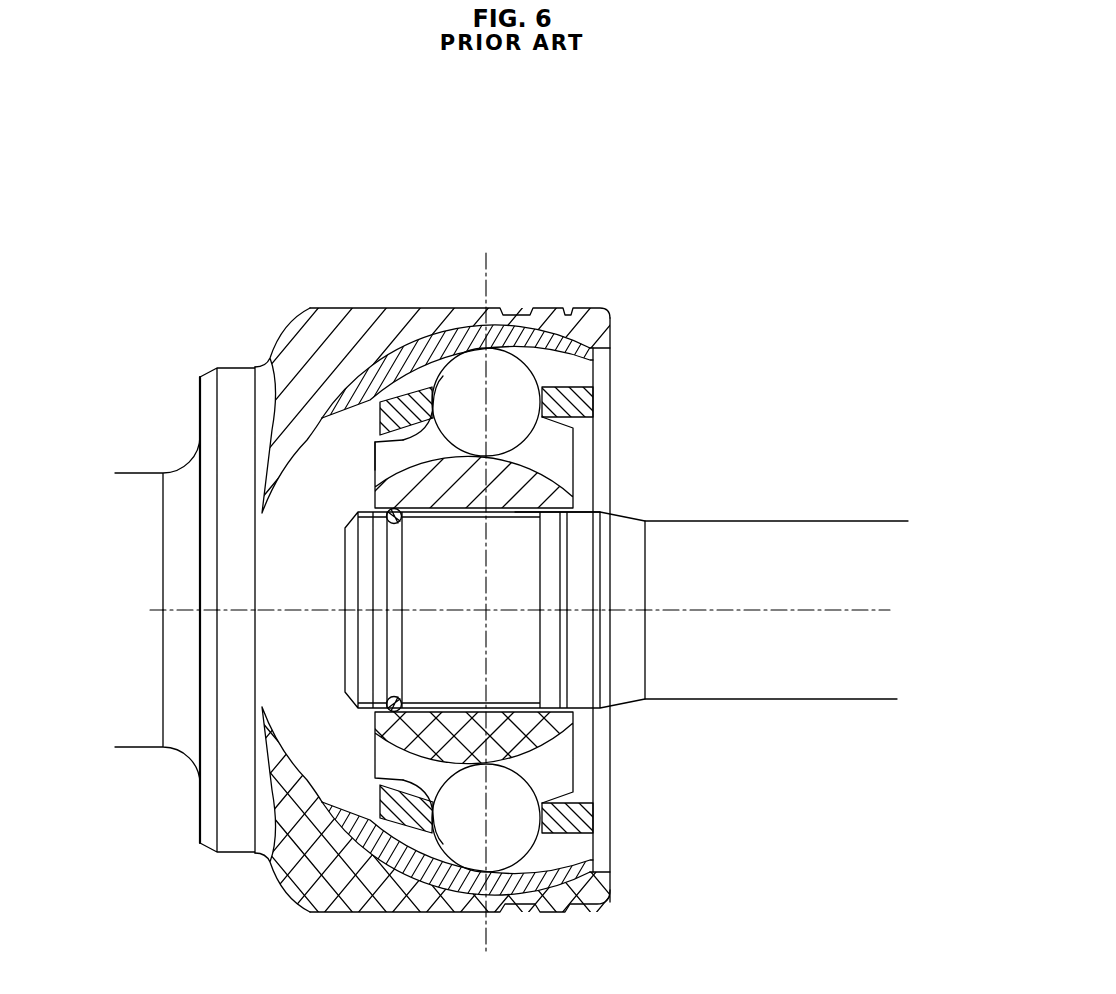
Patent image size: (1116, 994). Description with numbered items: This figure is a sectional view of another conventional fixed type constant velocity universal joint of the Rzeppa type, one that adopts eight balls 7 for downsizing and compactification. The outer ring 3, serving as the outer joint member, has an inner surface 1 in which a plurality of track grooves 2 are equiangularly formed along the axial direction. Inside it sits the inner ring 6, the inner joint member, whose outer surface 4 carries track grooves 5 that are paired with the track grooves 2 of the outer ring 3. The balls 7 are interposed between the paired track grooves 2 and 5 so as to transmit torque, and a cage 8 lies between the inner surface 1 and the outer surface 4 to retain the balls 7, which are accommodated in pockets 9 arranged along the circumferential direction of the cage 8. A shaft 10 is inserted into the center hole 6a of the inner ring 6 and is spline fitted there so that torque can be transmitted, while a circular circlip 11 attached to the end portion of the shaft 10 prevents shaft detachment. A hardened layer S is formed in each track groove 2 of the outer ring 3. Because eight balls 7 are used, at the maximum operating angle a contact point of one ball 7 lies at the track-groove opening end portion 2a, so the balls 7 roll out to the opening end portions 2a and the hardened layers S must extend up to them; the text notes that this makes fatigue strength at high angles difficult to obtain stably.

The inner surface 1 is at (375, 453).
The track grooves 2 is at (557, 353).
The opening end portions 2a is at (592, 353).
The outer ring 3 is at (360, 306).
The outer surface 4 is at (405, 830).
The track grooves 5 is at (545, 478).
The inner ring 6 is at (588, 750).
The center hole 6a is at (515, 513).
The balls 7 is at (508, 372).
The cage 8 is at (604, 806).
The pockets 9 is at (448, 385).
The shaft 10 is at (777, 512).
The circlip 11 is at (385, 712).
The hardened layer S is at (422, 338).